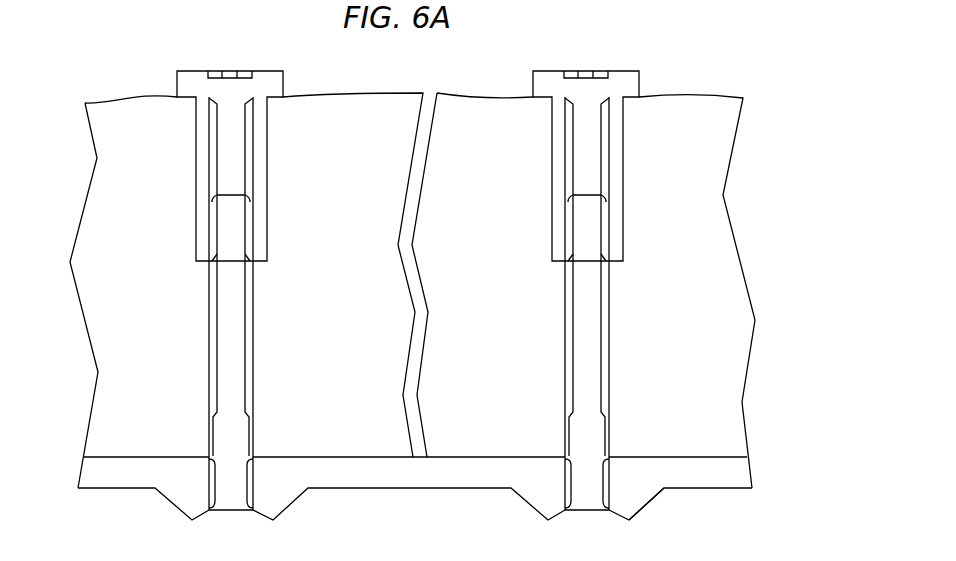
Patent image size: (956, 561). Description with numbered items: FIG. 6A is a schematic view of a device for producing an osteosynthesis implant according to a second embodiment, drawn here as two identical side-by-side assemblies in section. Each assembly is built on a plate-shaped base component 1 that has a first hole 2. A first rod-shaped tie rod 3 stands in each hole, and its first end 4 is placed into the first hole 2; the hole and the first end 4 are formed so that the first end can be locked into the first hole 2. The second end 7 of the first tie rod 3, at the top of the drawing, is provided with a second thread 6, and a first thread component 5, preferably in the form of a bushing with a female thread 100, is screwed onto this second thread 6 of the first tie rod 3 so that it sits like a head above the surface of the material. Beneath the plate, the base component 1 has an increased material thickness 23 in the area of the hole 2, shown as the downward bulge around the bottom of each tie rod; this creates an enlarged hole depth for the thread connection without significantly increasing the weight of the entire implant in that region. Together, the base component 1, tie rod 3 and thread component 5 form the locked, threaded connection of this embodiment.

The plate-shaped base component 1 is at (167, 477).
The female thread 100 is at (608, 175).
The thread component 5 is at (258, 137).
The second thread 6 is at (248, 300).
The rod-shaped tie rod 3 is at (232, 342).
The second end 7 is at (229, 234).
The first end 4 is at (231, 505).
The first hole 2 is at (245, 450).
The increased material thickness 23 is at (639, 496).